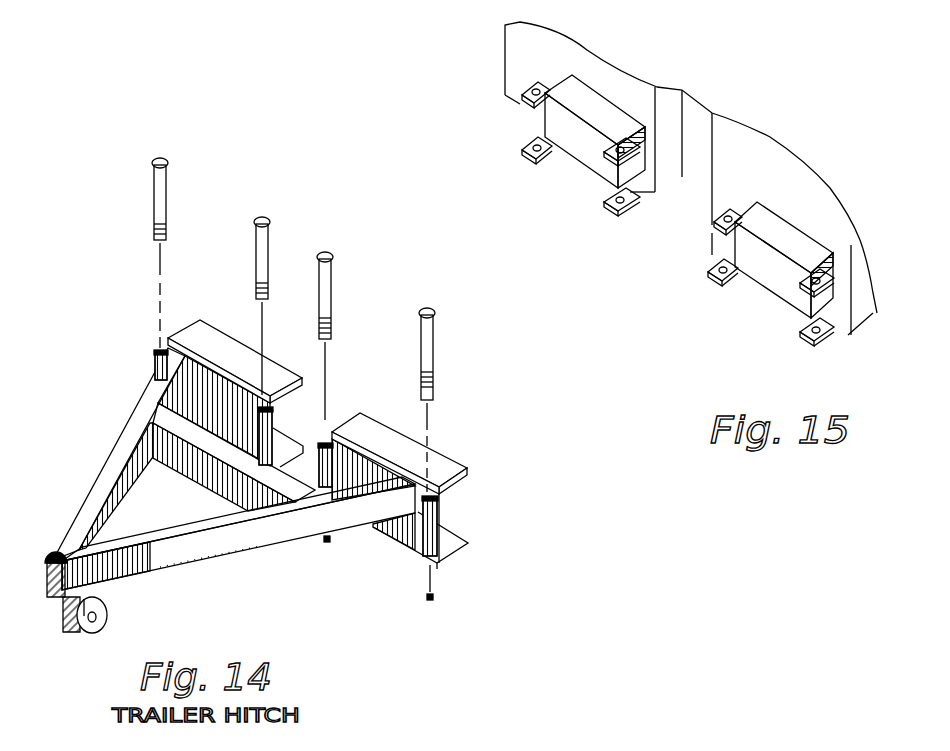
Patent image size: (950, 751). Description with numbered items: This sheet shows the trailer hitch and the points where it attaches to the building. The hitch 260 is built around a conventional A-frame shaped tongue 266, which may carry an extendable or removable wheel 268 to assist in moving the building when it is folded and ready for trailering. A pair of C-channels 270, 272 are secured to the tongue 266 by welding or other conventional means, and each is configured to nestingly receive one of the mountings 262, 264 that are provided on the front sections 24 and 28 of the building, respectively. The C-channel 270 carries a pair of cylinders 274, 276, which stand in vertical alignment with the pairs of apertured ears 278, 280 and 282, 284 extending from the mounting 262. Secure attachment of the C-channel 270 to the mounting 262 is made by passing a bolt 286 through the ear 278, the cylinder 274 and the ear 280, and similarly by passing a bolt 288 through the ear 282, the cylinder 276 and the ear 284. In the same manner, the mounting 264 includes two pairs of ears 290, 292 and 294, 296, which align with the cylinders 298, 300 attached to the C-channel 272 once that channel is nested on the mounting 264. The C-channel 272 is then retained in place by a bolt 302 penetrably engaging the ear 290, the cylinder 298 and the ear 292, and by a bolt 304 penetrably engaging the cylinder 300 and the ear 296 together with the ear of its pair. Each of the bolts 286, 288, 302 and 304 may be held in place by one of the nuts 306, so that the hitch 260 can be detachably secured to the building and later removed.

In FIG. 15, the front section 24 is at (520, 58).
In FIG. 15, the front section 28 is at (779, 158).
In FIG. 14, the hitch 260 is at (284, 601).
In FIG. 15, the mounting 262 is at (584, 170).
In FIG. 15, the mounting 264 is at (777, 292).
In FIG. 14, the A-frame shaped tongue 266 is at (167, 583).
In FIG. 14, the extendable/removable wheel 268 is at (80, 632).
In FIG. 14, the C-channel 270 is at (206, 335).
In FIG. 14, the C-channel 272 is at (445, 462).
In FIG. 14, the cylinder 274 is at (154, 363).
In FIG. 14, the cylinder 276 is at (285, 425).
In FIG. 15, the apertured ear 278 is at (525, 100).
In FIG. 15, the apertured ear 280 is at (536, 160).
In FIG. 15, the apertured ear 282 is at (614, 161).
In FIG. 15, the apertured ear 284 is at (628, 217).
In FIG. 14, the bolt 286 is at (164, 162).
In FIG. 14, the bolt 288 is at (270, 226).
In FIG. 15, the ear 290 is at (713, 228).
In FIG. 15, the ear 292 is at (722, 284).
In FIG. 15, the ear 294 is at (810, 294).
In FIG. 15, the ear 296 is at (820, 336).
In FIG. 14, the cylinder 298 is at (330, 446).
In FIG. 14, the cylinder 300 is at (442, 528).
In FIG. 14, the bolt 302 is at (332, 273).
In FIG. 14, the bolt 304 is at (434, 344).
In FIG. 14, the nut 306 is at (331, 541).